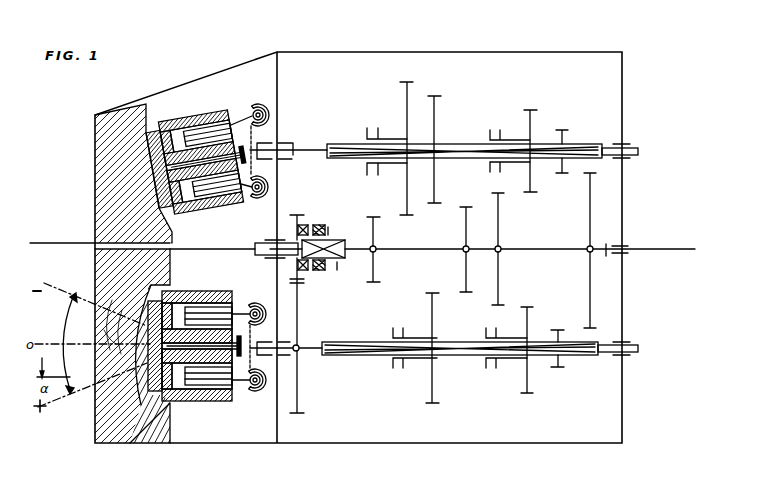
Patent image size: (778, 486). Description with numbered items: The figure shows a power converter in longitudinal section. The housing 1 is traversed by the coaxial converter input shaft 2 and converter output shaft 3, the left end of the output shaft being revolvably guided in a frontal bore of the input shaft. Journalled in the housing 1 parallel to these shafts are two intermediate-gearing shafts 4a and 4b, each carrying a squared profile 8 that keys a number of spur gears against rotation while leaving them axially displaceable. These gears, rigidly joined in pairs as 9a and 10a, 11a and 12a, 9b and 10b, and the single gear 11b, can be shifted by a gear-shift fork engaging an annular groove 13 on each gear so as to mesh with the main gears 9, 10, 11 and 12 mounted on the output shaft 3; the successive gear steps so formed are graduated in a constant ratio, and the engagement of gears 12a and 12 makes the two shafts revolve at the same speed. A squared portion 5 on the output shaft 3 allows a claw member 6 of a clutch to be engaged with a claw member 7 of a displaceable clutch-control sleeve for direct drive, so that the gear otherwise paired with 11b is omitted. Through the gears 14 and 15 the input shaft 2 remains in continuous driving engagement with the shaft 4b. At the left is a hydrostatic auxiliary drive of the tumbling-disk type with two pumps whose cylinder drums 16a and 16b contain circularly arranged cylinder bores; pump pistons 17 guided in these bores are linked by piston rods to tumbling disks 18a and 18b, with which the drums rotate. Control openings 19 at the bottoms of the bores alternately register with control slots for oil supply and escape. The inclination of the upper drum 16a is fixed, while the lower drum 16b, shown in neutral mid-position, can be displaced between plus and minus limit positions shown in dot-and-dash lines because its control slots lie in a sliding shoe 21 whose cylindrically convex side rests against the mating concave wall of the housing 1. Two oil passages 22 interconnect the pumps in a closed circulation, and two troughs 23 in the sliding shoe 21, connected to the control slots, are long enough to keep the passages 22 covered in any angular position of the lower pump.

The housing 1 is at (347, 52).
The converter input shaft 2 is at (47, 243).
The converter output shaft 3 is at (676, 244).
The intermediate-gearing shaft 4a is at (305, 148).
The intermediate-gearing shaft 4b is at (305, 352).
The squared portion 5 is at (323, 248).
The claw member 6 is at (316, 225).
The claw member 7 is at (314, 272).
The squared profile 8 is at (464, 146).
The main gear 9 is at (596, 195).
The spur gear 9a is at (559, 131).
The spur gear 9b is at (552, 368).
The main gear 10 is at (503, 222).
The spur gear 10a is at (528, 108).
The spur gear 10b is at (525, 394).
The main gear 11 is at (468, 263).
The spur gear 11a is at (434, 98).
The spur gear 11b is at (428, 400).
The main gear 12 is at (373, 270).
The spur gear 12a is at (404, 83).
The annular groove 13 is at (368, 127).
The gear 14 is at (298, 217).
The gear 15 is at (292, 413).
The cylinder drum 16a is at (200, 111).
The cylinder drum 16b is at (214, 400).
The pump piston 17 is at (190, 127).
The tumbling disk 18a is at (250, 137).
The tumbling disk 18b is at (257, 380).
The control opening 19 is at (158, 123).
The sliding shoe 21 is at (137, 440).
The oil passage 22 is at (99, 270).
The trough 23 is at (117, 441).